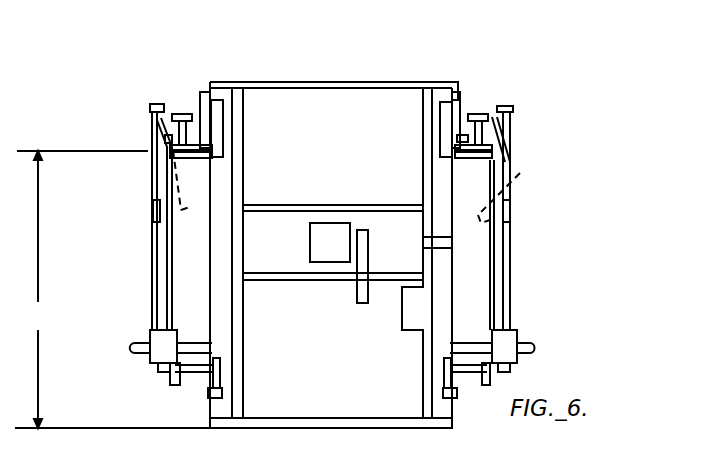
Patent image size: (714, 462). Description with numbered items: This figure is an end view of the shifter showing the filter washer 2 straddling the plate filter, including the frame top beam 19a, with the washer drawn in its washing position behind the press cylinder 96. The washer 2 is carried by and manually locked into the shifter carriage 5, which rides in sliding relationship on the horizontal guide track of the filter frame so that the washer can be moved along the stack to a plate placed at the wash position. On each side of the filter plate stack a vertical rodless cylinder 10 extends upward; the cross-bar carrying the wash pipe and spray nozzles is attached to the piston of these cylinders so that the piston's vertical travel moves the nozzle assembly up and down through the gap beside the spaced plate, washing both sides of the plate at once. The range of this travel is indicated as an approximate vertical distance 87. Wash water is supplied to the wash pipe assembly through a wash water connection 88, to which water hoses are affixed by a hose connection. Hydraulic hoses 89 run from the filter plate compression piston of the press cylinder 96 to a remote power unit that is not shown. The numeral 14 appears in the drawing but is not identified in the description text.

The filter washer 2 is at (173, 90).
The shifter carriage 5 is at (172, 119).
The frame top beam 19a is at (355, 87).
The vertical rodless cylinder 10 is at (167, 243).
The rod 14 is at (160, 268).
The wash water connection 88 is at (133, 343).
The vertical distance 87 is at (112, 289).
The press cylinder 96 is at (310, 250).
The hydraulic hoses 89 is at (357, 298).